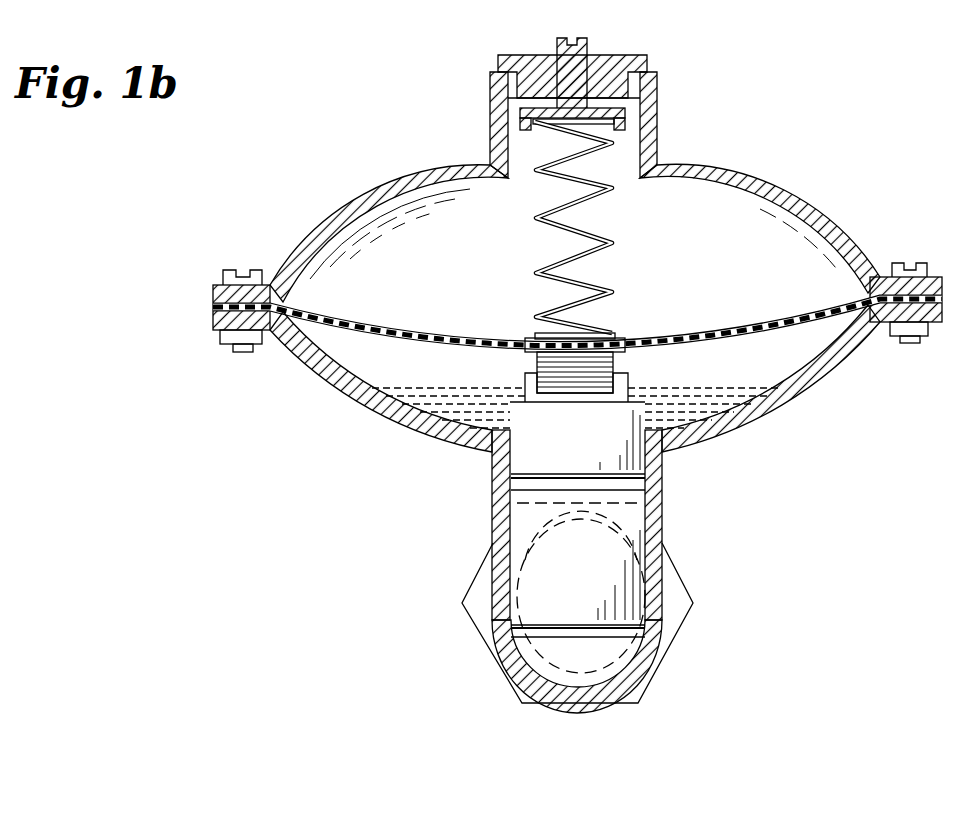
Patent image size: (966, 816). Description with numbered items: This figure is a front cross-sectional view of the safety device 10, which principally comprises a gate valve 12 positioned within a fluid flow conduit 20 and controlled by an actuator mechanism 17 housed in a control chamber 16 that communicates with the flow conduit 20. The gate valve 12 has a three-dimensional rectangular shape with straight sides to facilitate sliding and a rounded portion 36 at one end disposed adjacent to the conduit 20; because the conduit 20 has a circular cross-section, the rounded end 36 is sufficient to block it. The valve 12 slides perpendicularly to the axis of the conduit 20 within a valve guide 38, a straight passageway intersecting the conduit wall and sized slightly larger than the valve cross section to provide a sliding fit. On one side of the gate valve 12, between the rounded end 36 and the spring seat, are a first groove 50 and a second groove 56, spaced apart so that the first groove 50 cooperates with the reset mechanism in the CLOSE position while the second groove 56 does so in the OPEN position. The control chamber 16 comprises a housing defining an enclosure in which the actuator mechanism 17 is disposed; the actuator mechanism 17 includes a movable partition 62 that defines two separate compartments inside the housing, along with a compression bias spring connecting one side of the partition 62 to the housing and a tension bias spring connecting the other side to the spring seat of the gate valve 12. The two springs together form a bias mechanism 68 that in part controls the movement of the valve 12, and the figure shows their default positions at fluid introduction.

The safety device 10 is at (343, 126).
The control chamber 16 is at (810, 192).
The actuator mechanism 17 is at (485, 248).
The movable partition 62 is at (393, 323).
The bias mechanism 68 is at (625, 303).
The valve guide 38 is at (498, 494).
The first groove 50 is at (640, 481).
The gate valve 12 is at (632, 521).
The second groove 56 is at (636, 634).
The rounded portion 36 is at (553, 673).
The fluid flow conduit 20 is at (622, 717).